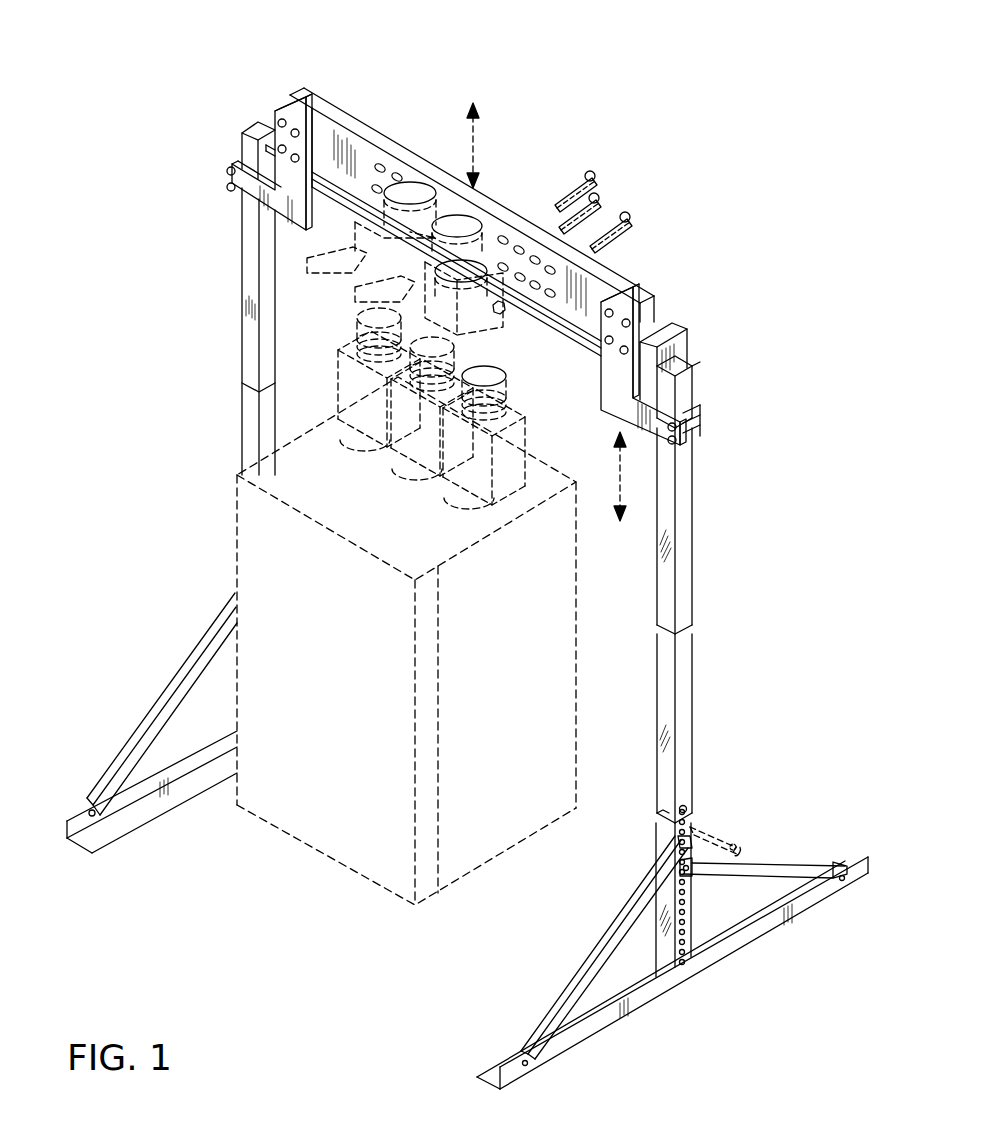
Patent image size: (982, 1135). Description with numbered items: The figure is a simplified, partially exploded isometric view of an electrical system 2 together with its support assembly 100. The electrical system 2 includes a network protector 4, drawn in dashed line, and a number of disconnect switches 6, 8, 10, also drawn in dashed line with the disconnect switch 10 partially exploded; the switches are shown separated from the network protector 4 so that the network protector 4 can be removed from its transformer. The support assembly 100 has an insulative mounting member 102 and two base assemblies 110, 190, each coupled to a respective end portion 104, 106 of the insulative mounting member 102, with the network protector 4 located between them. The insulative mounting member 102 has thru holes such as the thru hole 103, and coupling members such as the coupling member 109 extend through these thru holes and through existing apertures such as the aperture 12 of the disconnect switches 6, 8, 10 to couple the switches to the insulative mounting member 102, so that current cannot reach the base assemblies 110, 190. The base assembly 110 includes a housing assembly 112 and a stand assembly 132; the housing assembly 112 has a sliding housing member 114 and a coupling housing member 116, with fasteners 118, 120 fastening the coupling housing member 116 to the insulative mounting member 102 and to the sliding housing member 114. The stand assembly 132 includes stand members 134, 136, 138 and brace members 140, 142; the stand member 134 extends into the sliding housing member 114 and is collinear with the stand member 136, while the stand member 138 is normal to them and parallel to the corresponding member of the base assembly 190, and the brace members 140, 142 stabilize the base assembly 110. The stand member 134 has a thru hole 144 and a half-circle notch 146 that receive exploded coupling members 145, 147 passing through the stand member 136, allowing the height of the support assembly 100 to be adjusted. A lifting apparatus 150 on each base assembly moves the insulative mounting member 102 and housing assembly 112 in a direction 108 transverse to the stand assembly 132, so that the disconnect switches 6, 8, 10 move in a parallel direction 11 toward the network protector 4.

The electrical system 2 is at (146, 143).
The network protector 4 is at (298, 846).
The disconnect switch 6 is at (411, 182).
The disconnect switch 8 is at (459, 215).
The disconnect switch 10 is at (499, 255).
The direction 11 is at (480, 140).
The aperture 12 is at (506, 313).
The support assembly 100 is at (197, 252).
The insulative mounting member 102 is at (349, 120).
The thru hole 103 is at (572, 270).
The end portion 104 is at (299, 98).
The end portion 106 is at (652, 296).
The direction 108 is at (617, 455).
The coupling member 109 is at (630, 192).
The base assembly 110 is at (724, 668).
The housing assembly 112 is at (729, 389).
The sliding housing member 114 is at (695, 595).
The coupling housing member 116 is at (600, 391).
The fastener 118 is at (609, 324).
The fastener 120 is at (688, 438).
The stand assembly 132 is at (706, 763).
The stand member 134 is at (659, 719).
The stand member 136 is at (655, 846).
The stand member 138 is at (725, 964).
The brace member 140 is at (767, 861).
The brace member 142 is at (575, 973).
The thru hole 144 is at (695, 805).
The coupling member 145 is at (740, 826).
The notch 146 is at (660, 818).
The coupling member 147 is at (733, 850).
The lifting apparatus 150 is at (236, 86).
The base assembly 190 is at (216, 425).